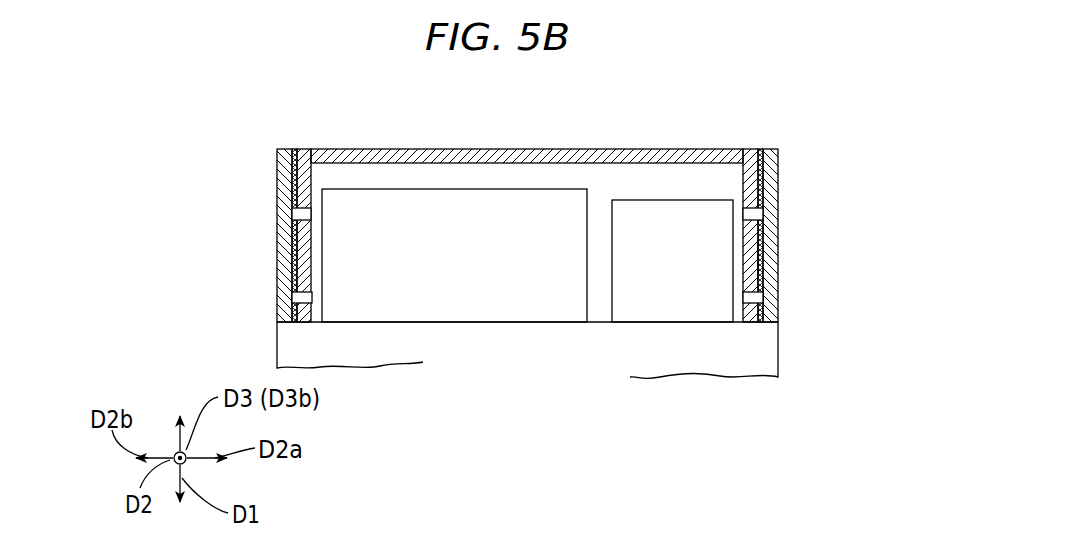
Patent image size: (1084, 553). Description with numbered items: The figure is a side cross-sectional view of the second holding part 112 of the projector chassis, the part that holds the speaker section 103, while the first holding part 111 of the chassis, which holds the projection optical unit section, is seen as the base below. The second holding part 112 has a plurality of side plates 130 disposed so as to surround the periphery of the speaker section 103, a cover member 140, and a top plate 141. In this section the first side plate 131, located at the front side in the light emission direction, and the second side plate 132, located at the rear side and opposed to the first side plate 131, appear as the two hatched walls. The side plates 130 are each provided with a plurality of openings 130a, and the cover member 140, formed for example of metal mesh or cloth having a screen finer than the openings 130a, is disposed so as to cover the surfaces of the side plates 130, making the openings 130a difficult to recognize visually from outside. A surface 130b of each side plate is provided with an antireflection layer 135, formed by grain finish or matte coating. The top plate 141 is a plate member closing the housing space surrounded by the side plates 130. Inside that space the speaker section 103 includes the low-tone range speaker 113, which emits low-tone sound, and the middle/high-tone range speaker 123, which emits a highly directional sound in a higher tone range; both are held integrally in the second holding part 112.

The speaker section 103 is at (527, 331).
The first holding part 111 is at (790, 352).
The second holding part 112 is at (786, 150).
The low-tone range speaker 113 is at (535, 306).
The middle/high-tone range speaker 123 is at (655, 303).
The side plates 130 is at (528, 235).
The openings 130a is at (300, 218).
The surface 130b is at (765, 255).
The first side plate 131 is at (300, 184).
The second side plate 132 is at (760, 186).
The antireflection layer 135 is at (294, 165).
The cover member 140 is at (300, 296).
The top plate 141 is at (523, 160).